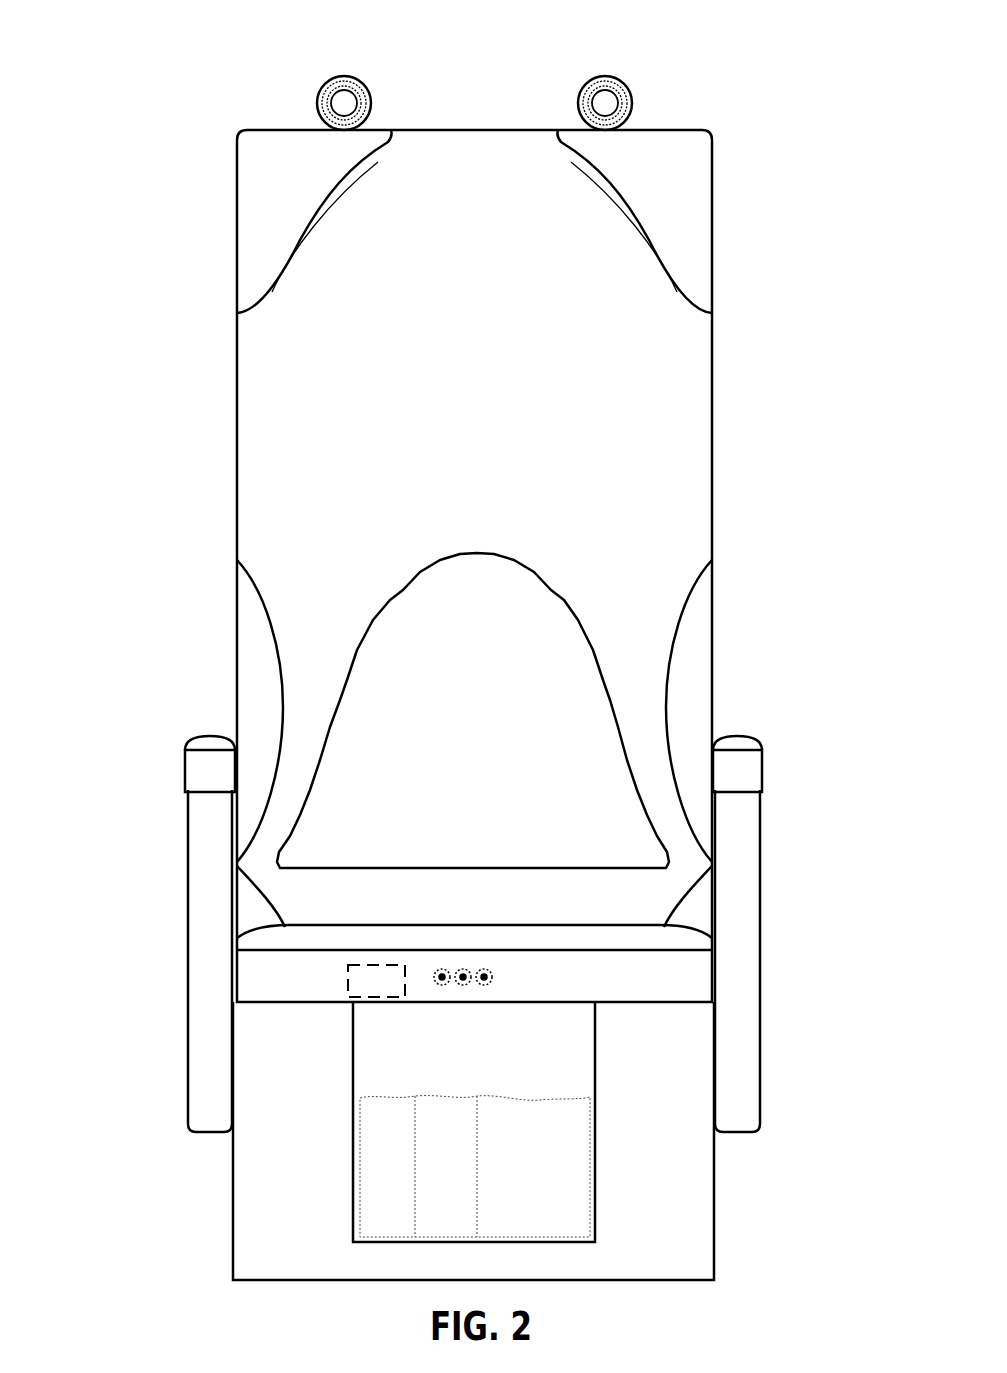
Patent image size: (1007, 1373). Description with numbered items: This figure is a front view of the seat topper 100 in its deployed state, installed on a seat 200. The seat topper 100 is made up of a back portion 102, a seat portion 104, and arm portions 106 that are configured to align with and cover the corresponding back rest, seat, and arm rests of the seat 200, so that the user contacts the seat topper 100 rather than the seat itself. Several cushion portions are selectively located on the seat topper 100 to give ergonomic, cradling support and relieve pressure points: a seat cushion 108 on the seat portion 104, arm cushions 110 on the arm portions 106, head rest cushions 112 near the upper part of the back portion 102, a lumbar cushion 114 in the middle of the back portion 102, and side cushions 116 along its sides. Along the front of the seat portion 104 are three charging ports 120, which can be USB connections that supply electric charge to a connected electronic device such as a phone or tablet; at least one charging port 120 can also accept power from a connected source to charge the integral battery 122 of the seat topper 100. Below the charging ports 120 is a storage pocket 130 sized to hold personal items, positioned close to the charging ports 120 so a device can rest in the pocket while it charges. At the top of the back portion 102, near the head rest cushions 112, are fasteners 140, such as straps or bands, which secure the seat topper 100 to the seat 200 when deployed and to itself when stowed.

The seat topper 100 is at (136, 40).
The back portion 102 is at (712, 365).
The seat portion 104 is at (657, 1003).
The arm portion 106 is at (187, 767).
The seat cushion 108 is at (690, 933).
The arm cushion 110 is at (207, 736).
The head rest cushion 112 is at (220, 166).
The lumbar cushion 114 is at (367, 620).
The side cushion 116 is at (237, 605).
The charging port 120 is at (484, 986).
The battery 122 is at (377, 997).
The storage pocket 130 is at (595, 1200).
The fastener 140 is at (345, 77).
The seat 200 is at (208, 1132).